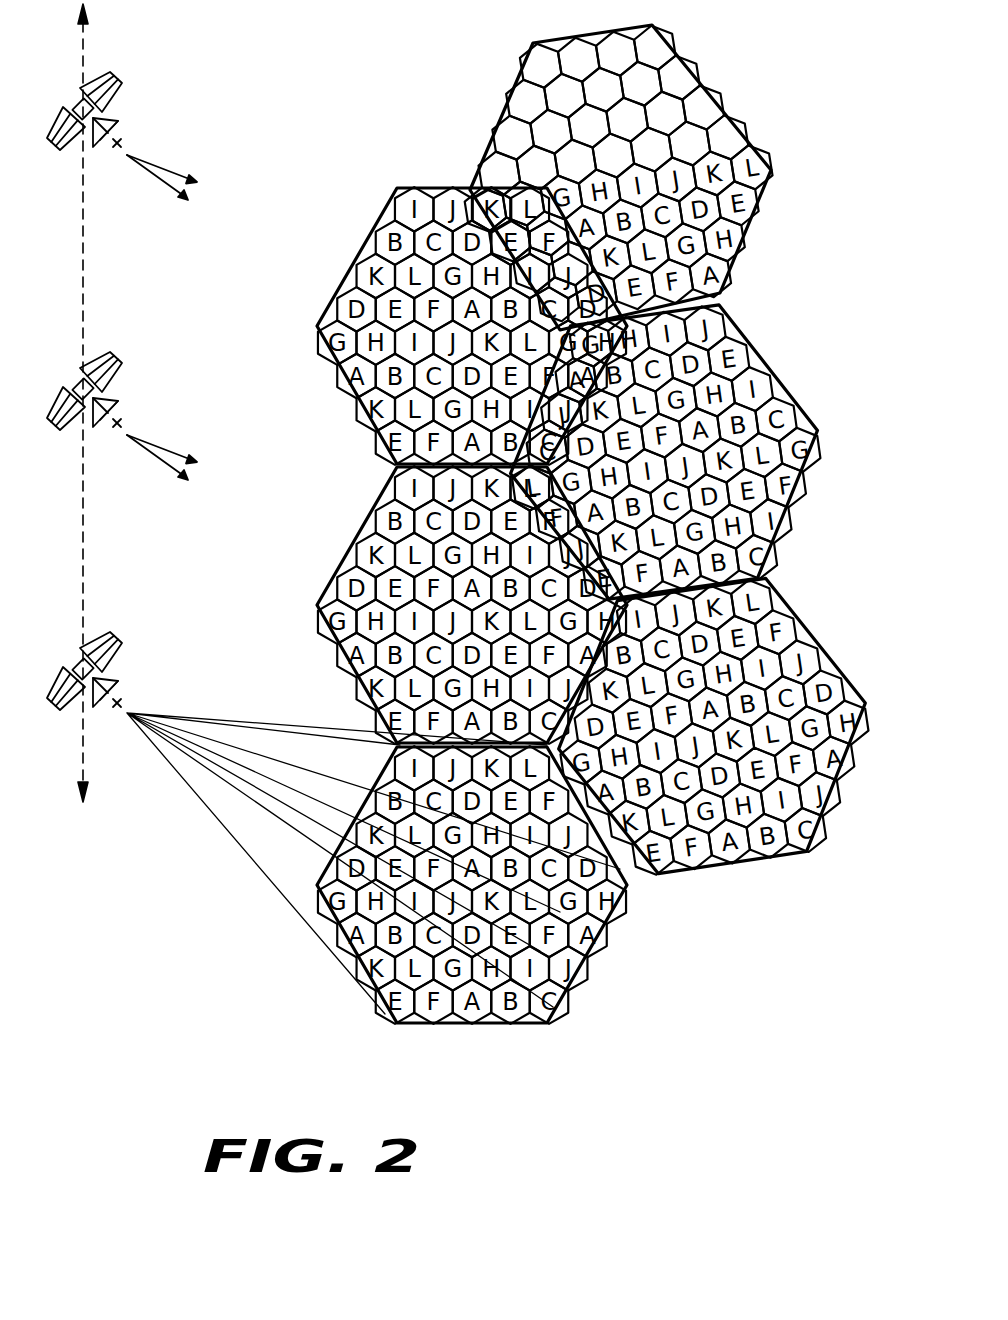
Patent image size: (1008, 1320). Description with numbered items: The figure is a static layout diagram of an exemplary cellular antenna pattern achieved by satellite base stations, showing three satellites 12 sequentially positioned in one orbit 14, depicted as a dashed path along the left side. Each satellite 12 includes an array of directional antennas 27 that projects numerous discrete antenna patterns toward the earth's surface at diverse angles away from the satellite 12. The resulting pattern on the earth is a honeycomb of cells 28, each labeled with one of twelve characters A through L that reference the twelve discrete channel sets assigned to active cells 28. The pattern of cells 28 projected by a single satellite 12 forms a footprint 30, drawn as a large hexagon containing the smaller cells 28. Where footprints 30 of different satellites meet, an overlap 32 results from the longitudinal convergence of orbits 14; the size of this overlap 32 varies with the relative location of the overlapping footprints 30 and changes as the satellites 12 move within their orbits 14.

The satellite 12 is at (123, 73).
The orbit 14 is at (83, 242).
The array of directional antennas 27 is at (118, 118).
The cell 28 is at (383, 234).
The footprint 30 is at (348, 406).
The overlap 32 is at (487, 173).